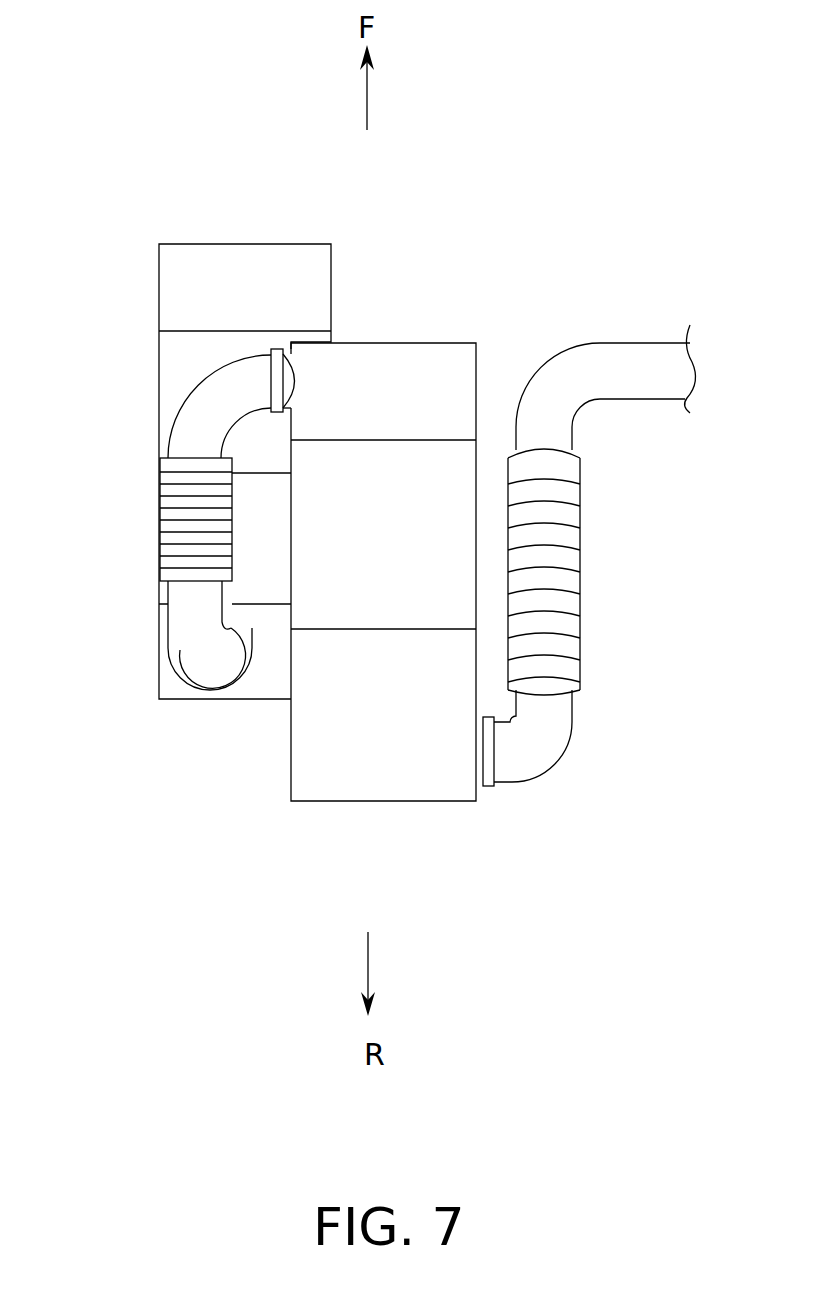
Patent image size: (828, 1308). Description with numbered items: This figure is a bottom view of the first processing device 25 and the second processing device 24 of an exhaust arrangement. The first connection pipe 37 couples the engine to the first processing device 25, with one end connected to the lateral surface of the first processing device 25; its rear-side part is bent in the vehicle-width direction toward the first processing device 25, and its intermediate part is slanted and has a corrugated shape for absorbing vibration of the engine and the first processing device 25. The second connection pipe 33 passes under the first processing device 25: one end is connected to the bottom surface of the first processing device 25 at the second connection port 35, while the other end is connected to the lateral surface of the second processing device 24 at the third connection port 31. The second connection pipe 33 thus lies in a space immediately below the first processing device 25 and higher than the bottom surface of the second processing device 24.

The second processing device 24 is at (430, 370).
The first processing device 25 is at (226, 262).
The third connection port 31 is at (288, 374).
The second connection pipe 33 is at (182, 426).
The second connection port 35 is at (212, 693).
The first connection pipe 37 is at (600, 365).